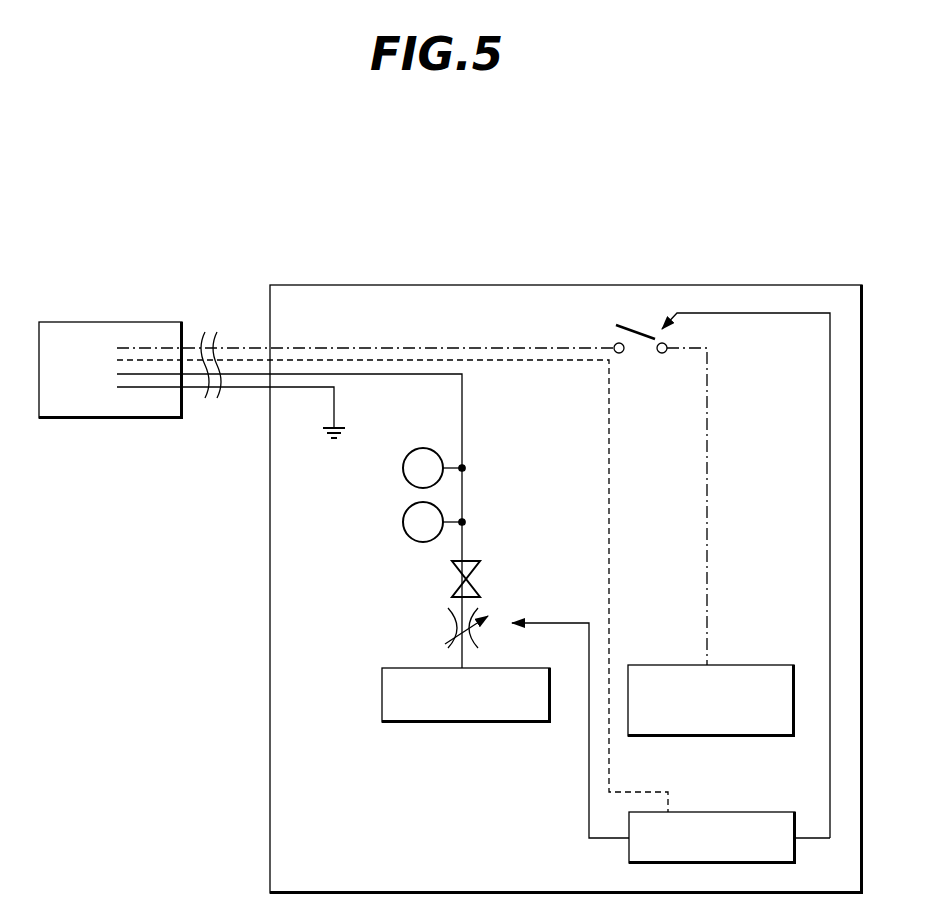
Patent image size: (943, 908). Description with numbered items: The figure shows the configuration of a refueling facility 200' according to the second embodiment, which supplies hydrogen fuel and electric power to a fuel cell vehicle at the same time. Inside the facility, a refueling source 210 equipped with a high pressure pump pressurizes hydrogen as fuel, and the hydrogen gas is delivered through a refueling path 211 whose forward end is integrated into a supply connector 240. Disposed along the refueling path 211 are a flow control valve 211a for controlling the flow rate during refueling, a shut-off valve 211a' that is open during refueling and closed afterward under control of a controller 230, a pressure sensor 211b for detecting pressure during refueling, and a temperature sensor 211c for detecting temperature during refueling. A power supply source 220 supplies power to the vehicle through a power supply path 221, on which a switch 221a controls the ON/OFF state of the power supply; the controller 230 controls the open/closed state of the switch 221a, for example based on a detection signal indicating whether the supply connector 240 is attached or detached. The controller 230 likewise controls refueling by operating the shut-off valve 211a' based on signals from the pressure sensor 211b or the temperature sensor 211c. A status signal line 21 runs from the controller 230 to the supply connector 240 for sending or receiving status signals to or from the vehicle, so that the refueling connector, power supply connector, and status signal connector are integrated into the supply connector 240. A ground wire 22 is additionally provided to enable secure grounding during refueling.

The refueling facility 200' is at (566, 553).
The supply connector 240 is at (128, 322).
The status signal line 21 is at (232, 360).
The ground wire 22 is at (258, 388).
The refueling path 211 is at (462, 428).
The flow control valve 211a is at (419, 625).
The shut-off valve 211a' is at (414, 576).
The pressure sensor 211b is at (403, 468).
The temperature sensor 211c is at (403, 522).
The refueling source 210 is at (480, 723).
The power supply source 220 is at (735, 665).
The power supply path 221 is at (707, 478).
The switch 221a is at (626, 325).
The controller 230 is at (725, 812).